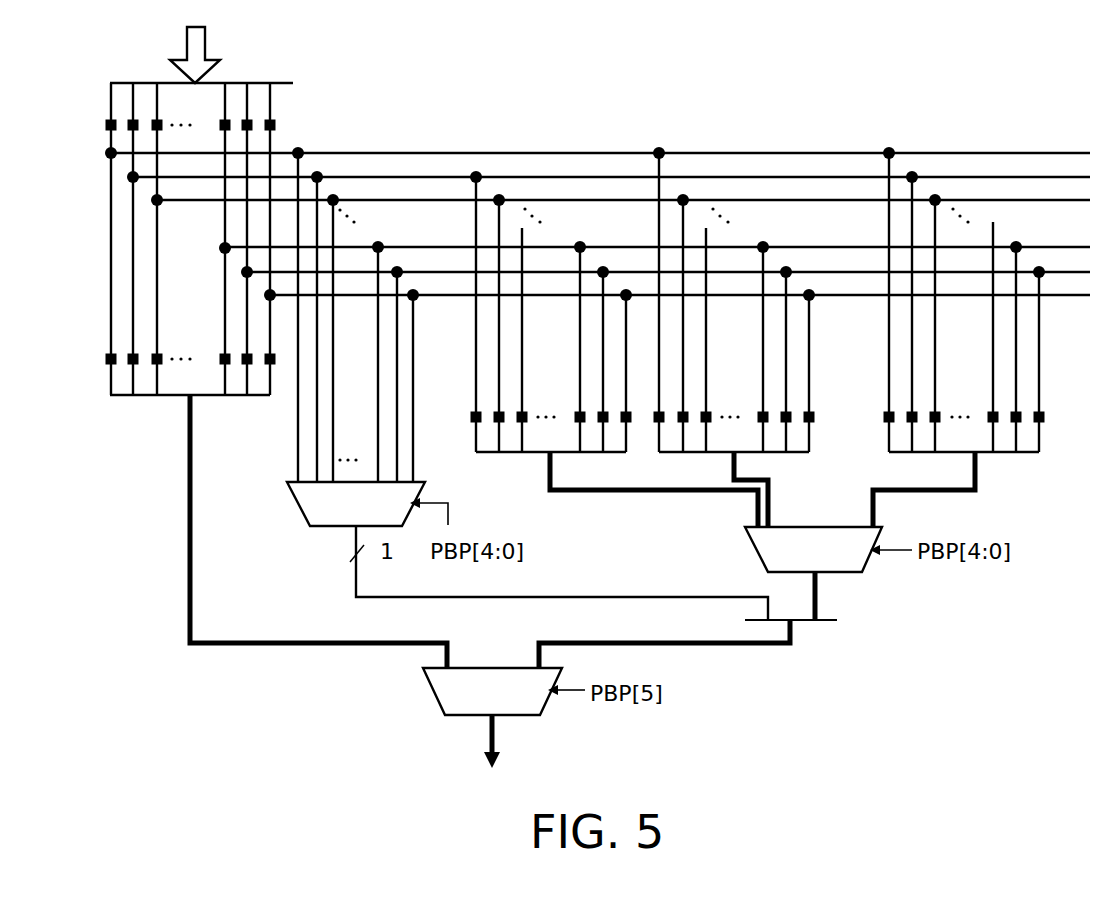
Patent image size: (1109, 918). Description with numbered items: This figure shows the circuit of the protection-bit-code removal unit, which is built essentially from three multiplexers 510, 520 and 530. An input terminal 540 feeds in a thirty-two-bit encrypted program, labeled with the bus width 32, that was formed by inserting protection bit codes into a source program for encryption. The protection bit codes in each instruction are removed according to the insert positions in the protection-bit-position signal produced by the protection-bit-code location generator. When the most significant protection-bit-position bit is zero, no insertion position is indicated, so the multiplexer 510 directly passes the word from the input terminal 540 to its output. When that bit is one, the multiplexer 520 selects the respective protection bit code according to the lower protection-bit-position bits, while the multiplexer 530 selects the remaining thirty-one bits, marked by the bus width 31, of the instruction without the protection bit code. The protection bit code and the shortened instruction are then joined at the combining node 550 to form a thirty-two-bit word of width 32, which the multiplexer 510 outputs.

The input terminal 540 is at (183, 42).
The 32-bit bus 32 is at (175, 52).
The 31-bit bus 31 is at (556, 462).
The multiplexer 520 is at (297, 509).
The multiplexer 530 is at (751, 545).
The bit combiner 550 is at (757, 638).
The multiplexer 510 is at (431, 685).